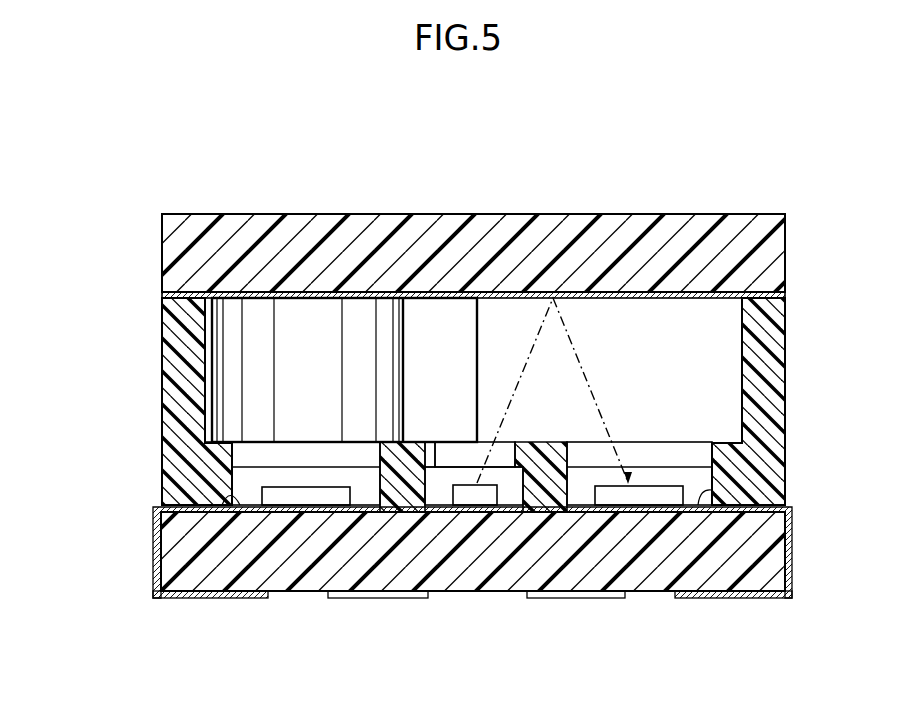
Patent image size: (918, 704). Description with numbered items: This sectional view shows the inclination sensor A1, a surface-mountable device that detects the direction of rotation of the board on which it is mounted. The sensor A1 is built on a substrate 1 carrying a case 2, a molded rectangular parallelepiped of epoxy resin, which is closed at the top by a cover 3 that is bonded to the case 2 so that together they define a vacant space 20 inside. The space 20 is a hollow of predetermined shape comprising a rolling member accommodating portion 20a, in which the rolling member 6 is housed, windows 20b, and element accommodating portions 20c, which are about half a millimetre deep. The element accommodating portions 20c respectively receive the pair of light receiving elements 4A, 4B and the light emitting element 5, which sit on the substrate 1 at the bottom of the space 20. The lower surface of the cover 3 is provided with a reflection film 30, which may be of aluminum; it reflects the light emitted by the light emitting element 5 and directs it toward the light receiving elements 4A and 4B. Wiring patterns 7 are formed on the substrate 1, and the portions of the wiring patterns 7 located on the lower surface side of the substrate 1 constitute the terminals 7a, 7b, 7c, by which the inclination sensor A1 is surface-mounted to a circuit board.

The inclination sensor A1 is at (164, 192).
The substrate 1 is at (767, 543).
The case 2 is at (785, 393).
The cover 3 is at (775, 265).
The reflection film 30 is at (700, 316).
The light receiving element 4A is at (316, 492).
The light receiving element 4B is at (632, 497).
The light emitting element 5 is at (467, 498).
The rolling member 6 is at (317, 317).
The wiring patterns 7 is at (157, 508).
The terminal 7a is at (228, 598).
The terminal 7b is at (732, 598).
The terminal 7c is at (392, 598).
The space 20 is at (119, 401).
The rolling member accommodating portion 20a is at (180, 332).
The window 20b is at (180, 433).
The element accommodating portion 20c is at (147, 474).